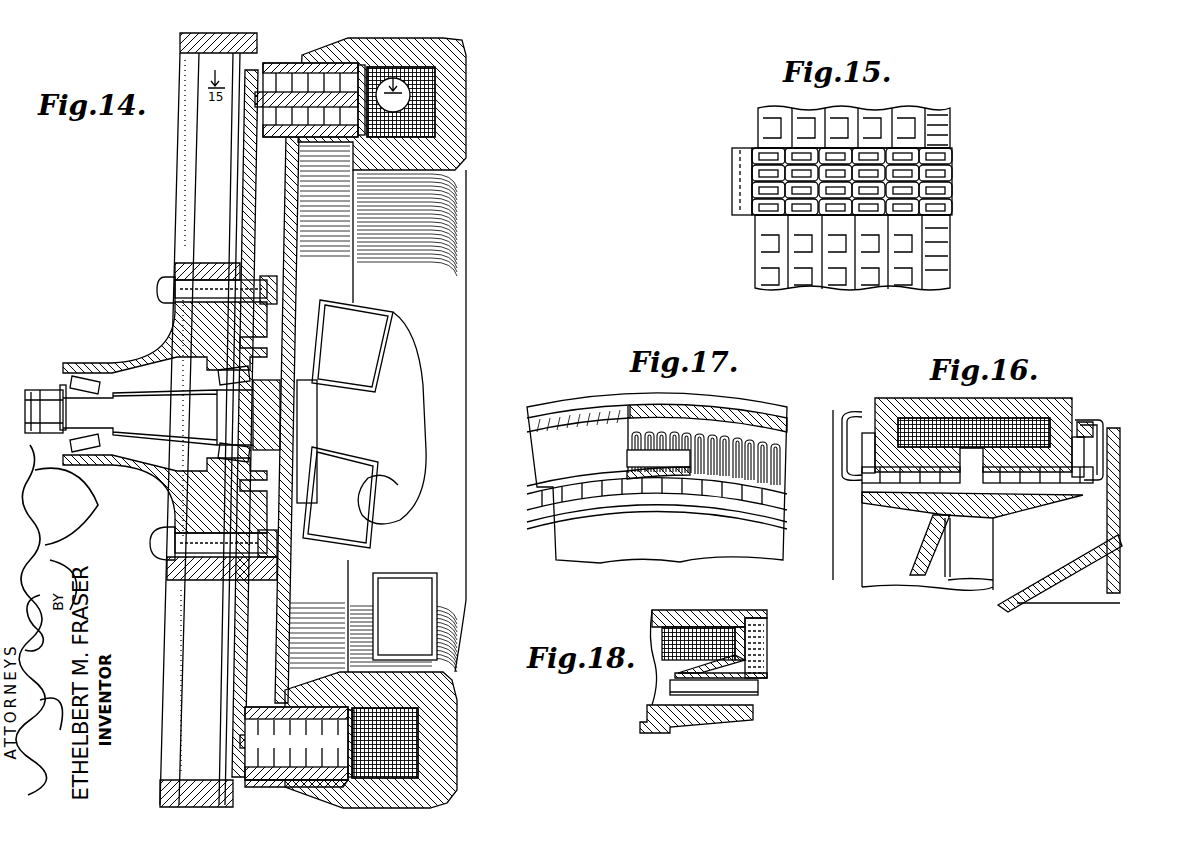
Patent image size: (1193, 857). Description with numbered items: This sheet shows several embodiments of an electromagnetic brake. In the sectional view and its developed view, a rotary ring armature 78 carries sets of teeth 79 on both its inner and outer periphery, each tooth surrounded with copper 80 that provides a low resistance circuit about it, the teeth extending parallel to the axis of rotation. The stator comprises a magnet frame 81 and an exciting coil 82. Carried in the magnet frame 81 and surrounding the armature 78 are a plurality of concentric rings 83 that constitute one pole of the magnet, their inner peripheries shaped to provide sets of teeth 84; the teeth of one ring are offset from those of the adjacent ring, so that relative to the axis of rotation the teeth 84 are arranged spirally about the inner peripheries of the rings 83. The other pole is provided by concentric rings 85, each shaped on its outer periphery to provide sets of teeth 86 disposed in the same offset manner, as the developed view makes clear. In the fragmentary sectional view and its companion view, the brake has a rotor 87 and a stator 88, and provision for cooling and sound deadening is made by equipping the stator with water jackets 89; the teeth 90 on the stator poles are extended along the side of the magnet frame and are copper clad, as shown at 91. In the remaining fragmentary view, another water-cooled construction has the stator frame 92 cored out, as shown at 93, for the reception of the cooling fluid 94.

In FIG. 14, the rotary ring armature 78 is at (262, 102).
In FIG. 14, the teeth 79 is at (292, 65).
In FIG. 15, the teeth 79 is at (760, 215).
In FIG. 15, the copper 80 is at (742, 177).
In FIG. 14, the magnet frame 81 is at (458, 122).
In FIG. 14, the exciting coil 82 is at (430, 133).
In FIG. 14, the concentric rings 83 is at (281, 776).
In FIG. 14, the teeth 84 is at (242, 768).
In FIG. 14, the concentric rings 85 is at (257, 707).
In FIG. 15, the concentric rings 85 is at (808, 290).
In FIG. 14, the teeth 86 is at (252, 727).
In FIG. 15, the teeth 86 is at (790, 247).
In FIG. 17, the rotor 87 is at (768, 508).
In FIG. 16, the rotor 87 is at (950, 512).
In FIG. 17, the stator 88 is at (760, 437).
In FIG. 16, the stator 88 is at (876, 398).
In FIG. 16, the water jackets 89 is at (1087, 420).
In FIG. 17, the teeth 90 is at (775, 470).
In FIG. 16, the teeth 90 is at (883, 474).
In FIG. 16, the copper cladding 91 is at (855, 457).
In FIG. 18, the frame 92 is at (740, 628).
In FIG. 18, the cored-out portion 93 is at (767, 637).
In FIG. 18, the cooling fluid 94 is at (767, 660).